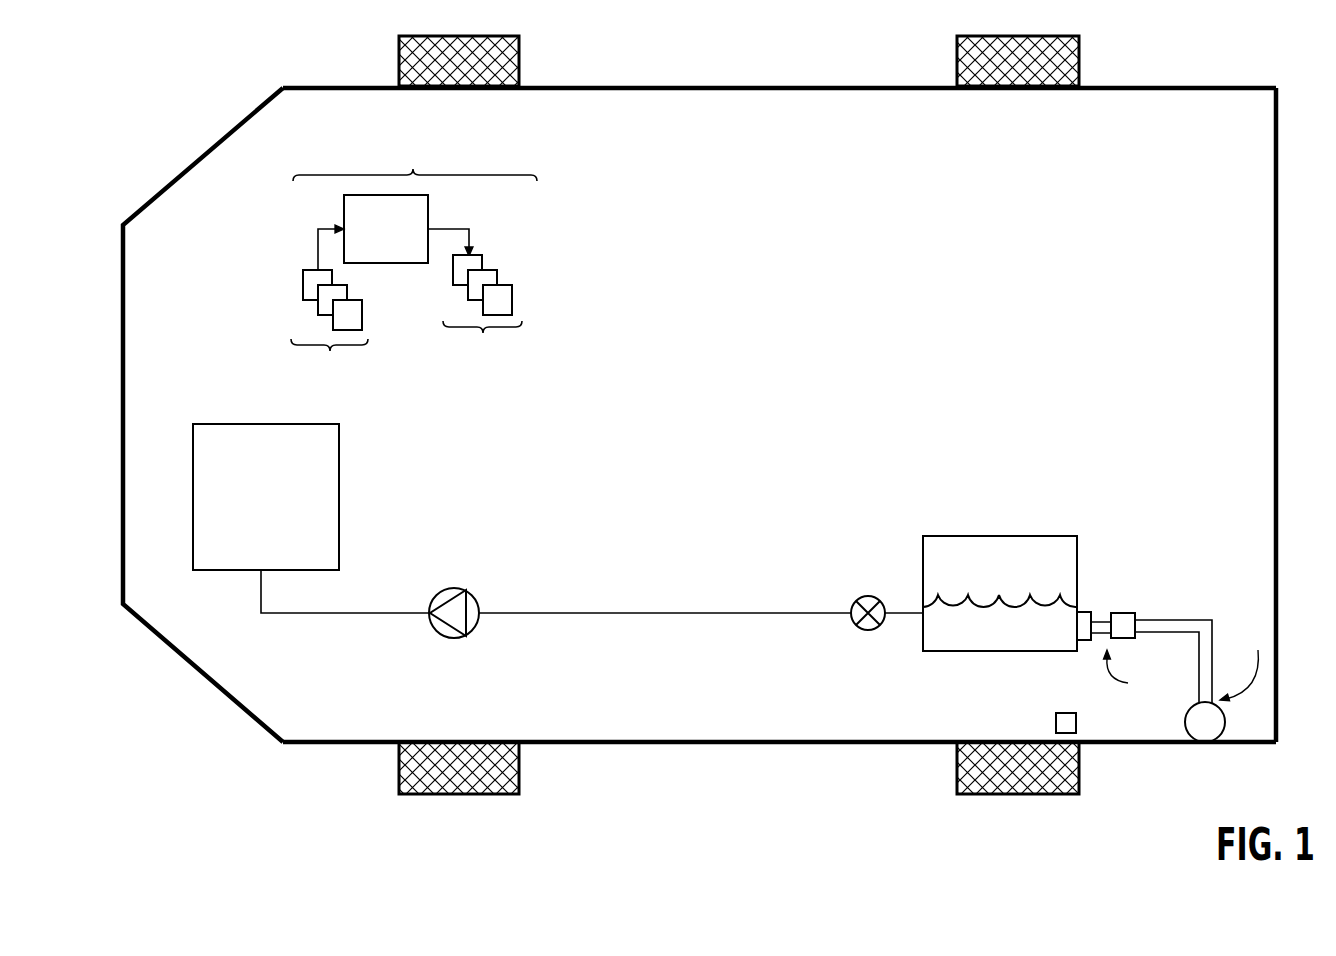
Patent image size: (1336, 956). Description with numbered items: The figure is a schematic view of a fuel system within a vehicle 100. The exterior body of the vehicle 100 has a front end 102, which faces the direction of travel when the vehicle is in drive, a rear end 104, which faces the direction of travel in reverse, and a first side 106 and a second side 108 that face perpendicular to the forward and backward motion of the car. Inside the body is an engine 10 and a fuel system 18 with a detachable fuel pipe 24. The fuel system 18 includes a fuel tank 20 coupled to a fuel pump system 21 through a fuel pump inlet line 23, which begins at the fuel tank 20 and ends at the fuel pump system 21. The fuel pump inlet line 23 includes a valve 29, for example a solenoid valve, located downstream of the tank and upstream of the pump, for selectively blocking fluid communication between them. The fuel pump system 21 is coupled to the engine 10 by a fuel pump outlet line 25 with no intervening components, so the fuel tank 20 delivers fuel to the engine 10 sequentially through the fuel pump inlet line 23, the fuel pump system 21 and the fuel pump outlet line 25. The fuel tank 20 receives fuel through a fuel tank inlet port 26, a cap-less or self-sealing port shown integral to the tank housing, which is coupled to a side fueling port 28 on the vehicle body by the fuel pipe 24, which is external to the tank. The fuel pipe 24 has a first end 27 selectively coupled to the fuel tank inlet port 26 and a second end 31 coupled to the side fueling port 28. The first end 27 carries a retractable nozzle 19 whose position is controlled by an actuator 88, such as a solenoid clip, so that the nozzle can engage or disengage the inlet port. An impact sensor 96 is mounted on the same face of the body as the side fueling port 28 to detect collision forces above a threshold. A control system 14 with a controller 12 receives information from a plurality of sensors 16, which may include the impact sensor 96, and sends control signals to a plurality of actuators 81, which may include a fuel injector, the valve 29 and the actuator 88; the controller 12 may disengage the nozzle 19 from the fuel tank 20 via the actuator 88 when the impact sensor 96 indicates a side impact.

The vehicle 100 is at (690, 415).
The front end 102 is at (123, 391).
The rear end 104 is at (1277, 382).
The first side 106 is at (768, 745).
The second side 108 is at (942, 86).
The engine 10 is at (266, 497).
The controller 12 is at (395, 232).
The control system 14 is at (414, 255).
The sensors 16 is at (329, 330).
The actuators 81 is at (482, 315).
The fuel system 18 is at (1091, 611).
The retractable nozzle 19 is at (1100, 618).
The fuel tank 20 is at (1053, 536).
The fuel pump system 21 is at (447, 638).
The fuel pump inlet line 23 is at (607, 614).
The fuel pipe 24 is at (1188, 620).
The fuel pump outlet line 25 is at (322, 614).
The fuel tank inlet port 26 is at (1089, 641).
The first end 27 is at (1128, 677).
The side fueling port 28 is at (1187, 705).
The valve 29 is at (870, 596).
The second end 31 is at (1240, 666).
The actuator 88 is at (1128, 613).
The impact sensor 96 is at (1057, 713).